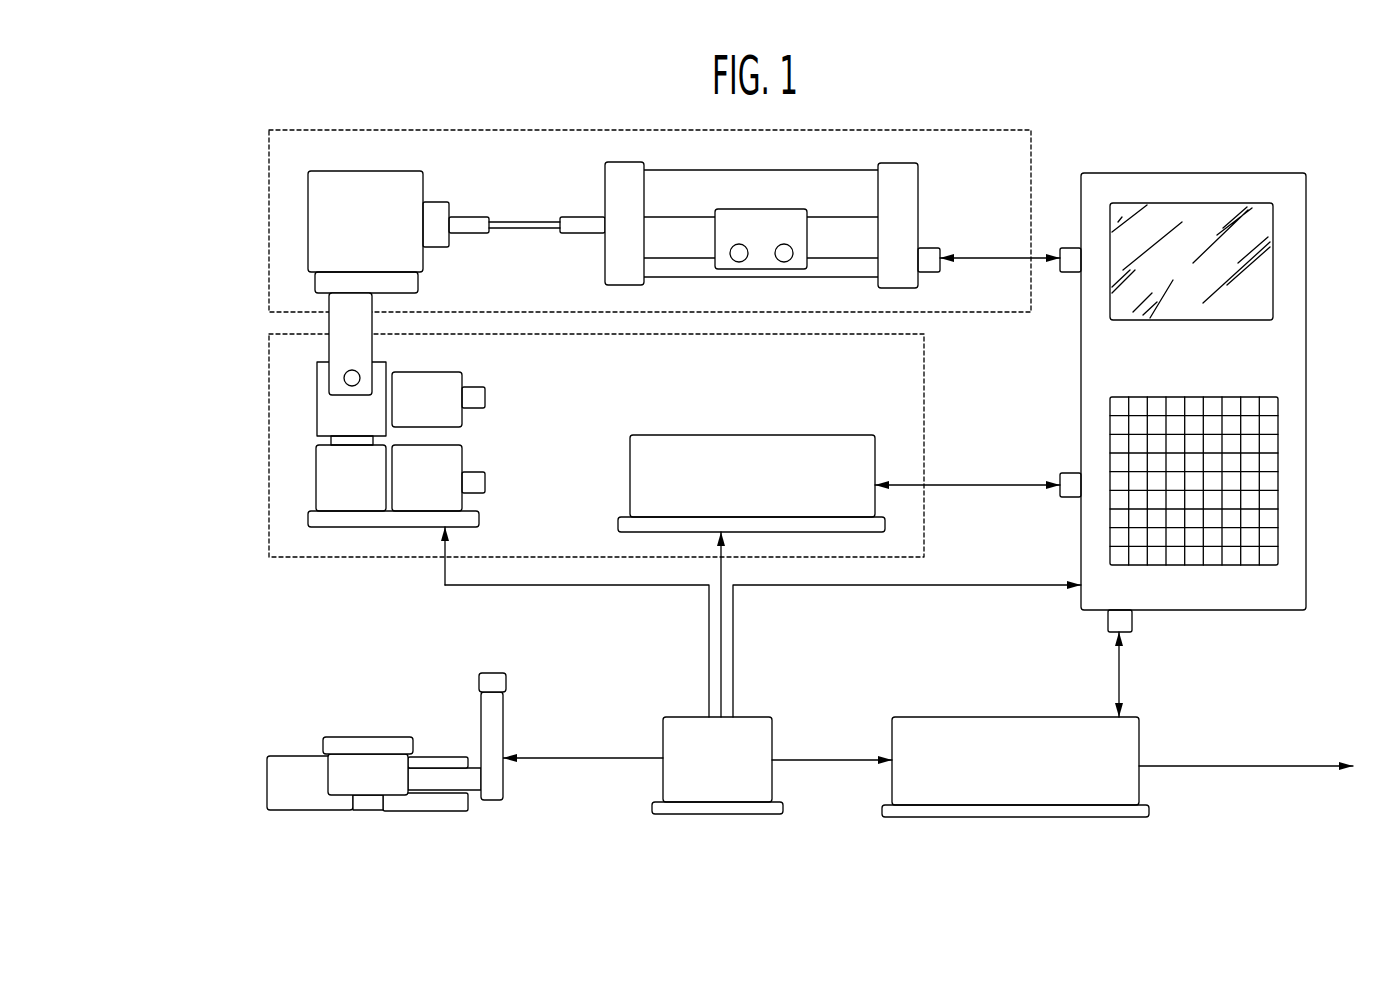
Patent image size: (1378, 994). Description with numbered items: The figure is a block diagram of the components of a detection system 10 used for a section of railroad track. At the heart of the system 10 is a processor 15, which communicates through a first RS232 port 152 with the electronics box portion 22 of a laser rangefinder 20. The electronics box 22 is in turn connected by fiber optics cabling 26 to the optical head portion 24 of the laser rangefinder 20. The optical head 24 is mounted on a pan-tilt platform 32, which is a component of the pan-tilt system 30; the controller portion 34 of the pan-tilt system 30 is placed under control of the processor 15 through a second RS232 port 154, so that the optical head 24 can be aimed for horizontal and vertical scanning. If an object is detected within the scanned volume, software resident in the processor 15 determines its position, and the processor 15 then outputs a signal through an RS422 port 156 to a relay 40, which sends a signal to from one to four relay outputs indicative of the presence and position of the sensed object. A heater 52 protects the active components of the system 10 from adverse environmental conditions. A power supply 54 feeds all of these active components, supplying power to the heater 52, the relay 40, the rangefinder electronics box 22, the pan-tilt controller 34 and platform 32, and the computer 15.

The system 10 is at (238, 266).
The processor 15 is at (1130, 172).
The laser rangefinder 20 is at (466, 128).
The electronics box portion 22 is at (920, 195).
The optical head portion 24 is at (355, 171).
The fiber optics cabling 26 is at (525, 232).
The pan-tilt system 30 is at (264, 390).
The pan-tilt platform 32 is at (465, 415).
The controller portion 34 is at (630, 465).
The relay 40 is at (950, 716).
The heater 52 is at (285, 756).
The power supply 54 is at (688, 716).
The first RS232 port 152 is at (1066, 248).
The second RS232 port 154 is at (1065, 473).
The RS422 port 156 is at (1108, 622).